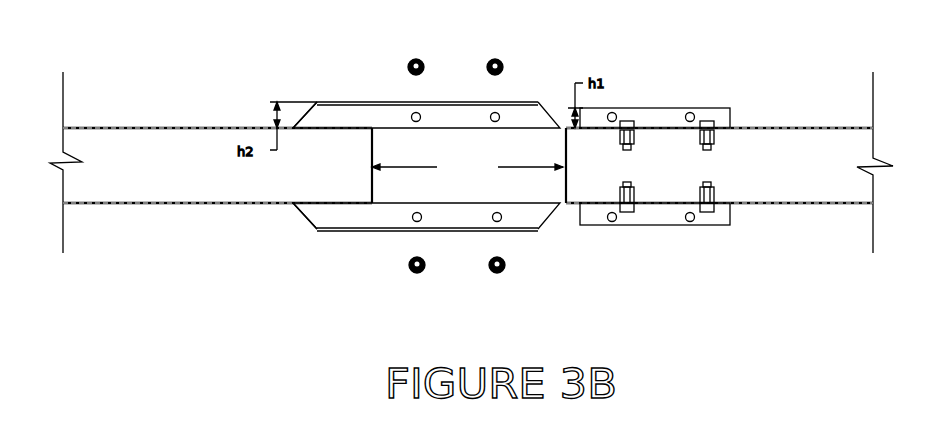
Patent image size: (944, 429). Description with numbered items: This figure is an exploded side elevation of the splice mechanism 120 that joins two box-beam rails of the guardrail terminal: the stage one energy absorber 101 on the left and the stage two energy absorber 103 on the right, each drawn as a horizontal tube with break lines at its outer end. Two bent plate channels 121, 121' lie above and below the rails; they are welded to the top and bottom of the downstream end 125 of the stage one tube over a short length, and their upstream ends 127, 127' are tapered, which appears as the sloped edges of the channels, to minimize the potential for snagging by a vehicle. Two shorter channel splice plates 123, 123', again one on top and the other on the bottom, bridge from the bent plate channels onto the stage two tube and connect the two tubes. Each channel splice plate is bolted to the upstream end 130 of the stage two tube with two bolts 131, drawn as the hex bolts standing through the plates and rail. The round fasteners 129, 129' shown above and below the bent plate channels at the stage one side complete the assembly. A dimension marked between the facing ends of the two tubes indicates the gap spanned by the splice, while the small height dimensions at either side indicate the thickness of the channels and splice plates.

The stage one energy absorber 101 is at (168, 206).
The stage two energy absorber 103 is at (777, 206).
The splice mechanism 120 is at (555, 77).
The bent plate channel 121 is at (426, 95).
The bent plate channel 121' is at (423, 252).
The channel splice plate 123 is at (655, 93).
The channel splice plate 123' is at (655, 234).
The downstream end of the stage one tube 125 is at (310, 178).
The upstream end of the channel 127 is at (293, 101).
The upstream end of the channel 127' is at (283, 241).
The upper bolt 129 is at (473, 72).
The lower bolt 129' is at (498, 264).
The upstream end of the stage two tube 130 is at (598, 168).
The bolt 131 is at (713, 145).